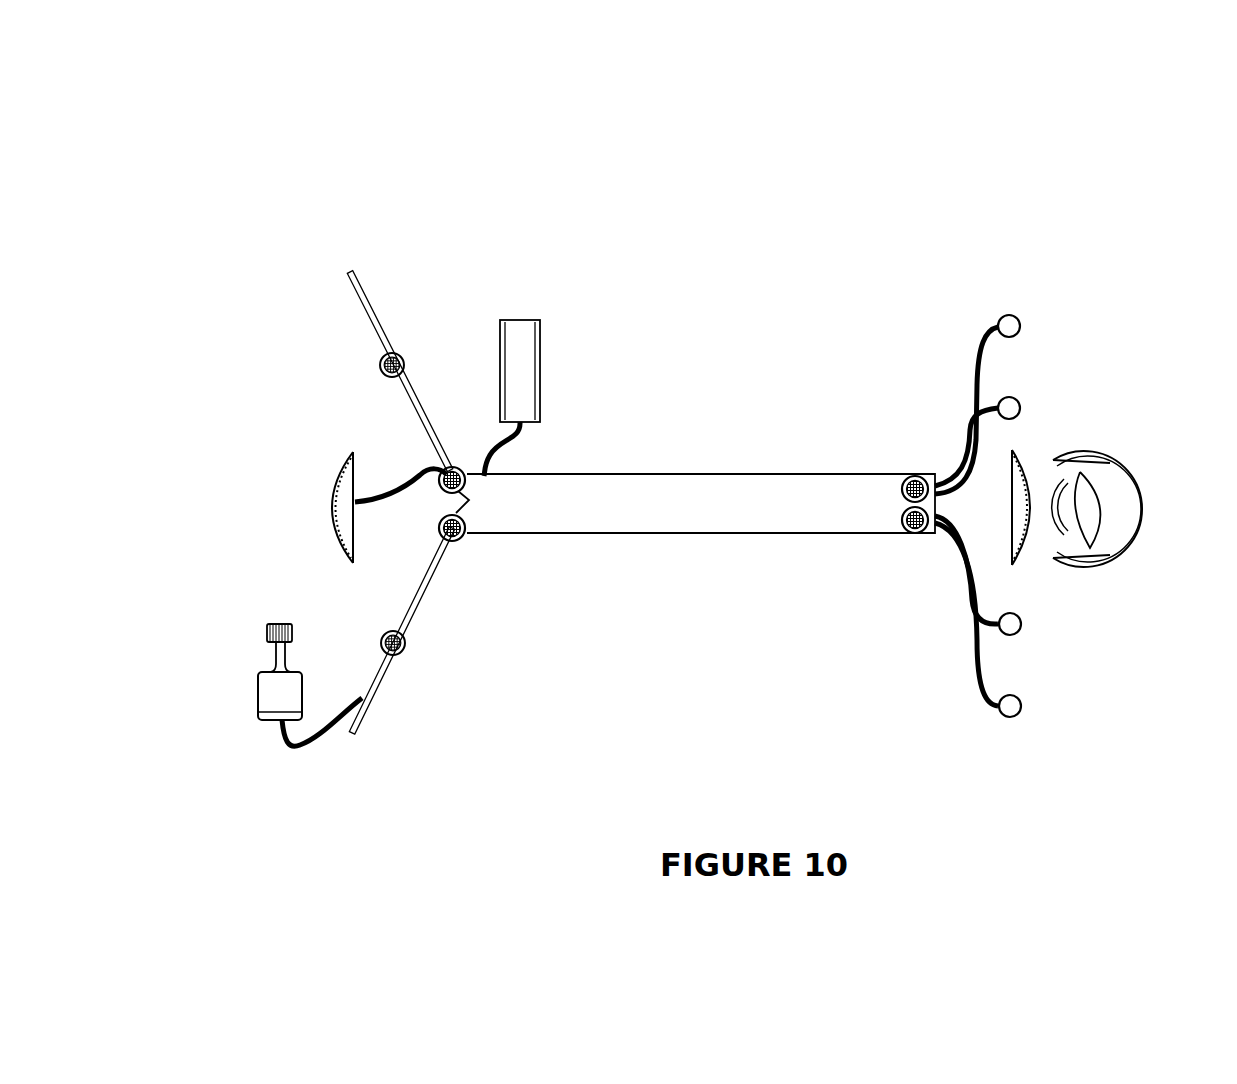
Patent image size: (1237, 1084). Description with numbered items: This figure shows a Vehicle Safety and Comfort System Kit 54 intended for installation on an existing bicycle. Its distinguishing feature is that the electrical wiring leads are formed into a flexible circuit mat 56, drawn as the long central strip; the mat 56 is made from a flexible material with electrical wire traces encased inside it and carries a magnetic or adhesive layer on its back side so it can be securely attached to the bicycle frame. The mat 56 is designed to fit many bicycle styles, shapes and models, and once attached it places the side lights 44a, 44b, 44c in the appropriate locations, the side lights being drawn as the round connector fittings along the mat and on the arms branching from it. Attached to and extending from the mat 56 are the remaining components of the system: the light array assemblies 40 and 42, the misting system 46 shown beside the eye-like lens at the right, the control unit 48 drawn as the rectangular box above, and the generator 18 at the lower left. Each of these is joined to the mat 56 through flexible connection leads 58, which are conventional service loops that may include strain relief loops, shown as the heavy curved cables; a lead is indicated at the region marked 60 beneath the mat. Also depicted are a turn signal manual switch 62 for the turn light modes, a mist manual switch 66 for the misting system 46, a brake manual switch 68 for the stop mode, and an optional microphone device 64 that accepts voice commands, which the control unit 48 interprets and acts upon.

The generator 18 is at (258, 695).
The light array assembly 40 is at (1015, 451).
The light array assembly 42 is at (330, 496).
The side light 44a is at (912, 560).
The side light 44b is at (480, 505).
The side light 44c is at (368, 356).
The misting system 46 is at (1135, 541).
The control unit 48 is at (542, 365).
The Vehicle Safety and Comfort System Kit 54 is at (1010, 160).
The flexible circuit mat 56 is at (681, 466).
The flexible connection leads 58 is at (932, 336).
The housing bottom / conduit 60 is at (721, 548).
The turn signal manual switch 62 is at (1017, 316).
The microphone device 64 is at (1020, 398).
The mist manual switch 66 is at (1022, 627).
The brake manual switch 68 is at (1020, 715).